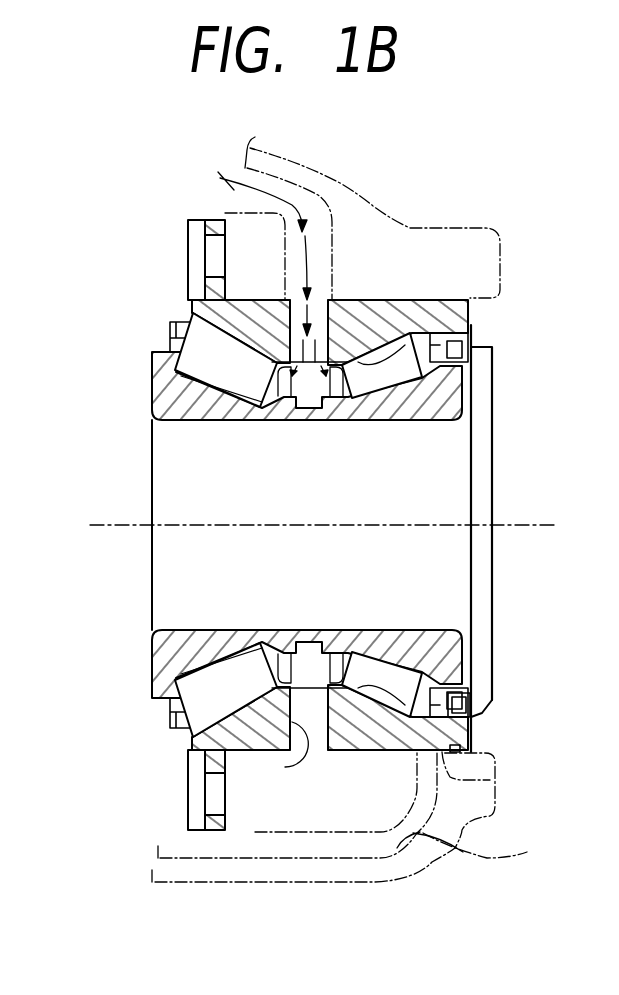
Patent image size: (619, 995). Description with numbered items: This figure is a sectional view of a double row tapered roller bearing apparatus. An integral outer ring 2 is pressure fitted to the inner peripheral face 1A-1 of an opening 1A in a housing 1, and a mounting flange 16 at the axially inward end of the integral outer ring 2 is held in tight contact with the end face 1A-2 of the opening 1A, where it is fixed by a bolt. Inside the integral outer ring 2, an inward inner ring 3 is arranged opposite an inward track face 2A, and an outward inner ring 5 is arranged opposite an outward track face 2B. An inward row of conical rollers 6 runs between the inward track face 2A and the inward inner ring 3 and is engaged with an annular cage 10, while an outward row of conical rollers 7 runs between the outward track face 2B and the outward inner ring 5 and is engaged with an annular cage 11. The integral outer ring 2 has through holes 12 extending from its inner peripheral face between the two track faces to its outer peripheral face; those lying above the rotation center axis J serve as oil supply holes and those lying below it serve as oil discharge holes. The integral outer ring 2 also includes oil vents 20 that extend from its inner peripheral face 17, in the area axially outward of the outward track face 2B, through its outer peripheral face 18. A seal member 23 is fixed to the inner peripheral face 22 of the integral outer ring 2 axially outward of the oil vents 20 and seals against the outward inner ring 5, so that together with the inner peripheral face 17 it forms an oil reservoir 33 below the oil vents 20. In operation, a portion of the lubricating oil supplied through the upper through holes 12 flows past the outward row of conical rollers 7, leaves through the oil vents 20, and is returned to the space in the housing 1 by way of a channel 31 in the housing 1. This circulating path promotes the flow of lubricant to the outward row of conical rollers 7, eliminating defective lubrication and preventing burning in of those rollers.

The housing 1 is at (370, 203).
The opening 1A is at (453, 237).
The inner peripheral face 1A-1 is at (449, 298).
The end face 1A-2 is at (213, 220).
The integral outer ring 2 is at (191, 299).
The inward track face 2A is at (173, 350).
The outward track face 2B is at (400, 327).
The inward inner ring 3 is at (150, 395).
The outward inner ring 5 is at (475, 395).
The inward row of conical rollers 6 is at (192, 352).
The outward row of conical rollers 7 is at (440, 400).
The annular cage 10 is at (187, 321).
The annular cage 11 is at (463, 358).
The through holes 12 is at (317, 297).
The mounting flange 16 is at (188, 237).
The inner peripheral face 17 is at (478, 690).
The outer peripheral face 18 is at (490, 780).
The oil vents 20 is at (458, 746).
The inner peripheral face 22 is at (480, 703).
The seal member 23 is at (475, 713).
The channel 31 is at (477, 848).
The oil reservoir 33 is at (470, 698).
The rotation center axis J is at (130, 522).